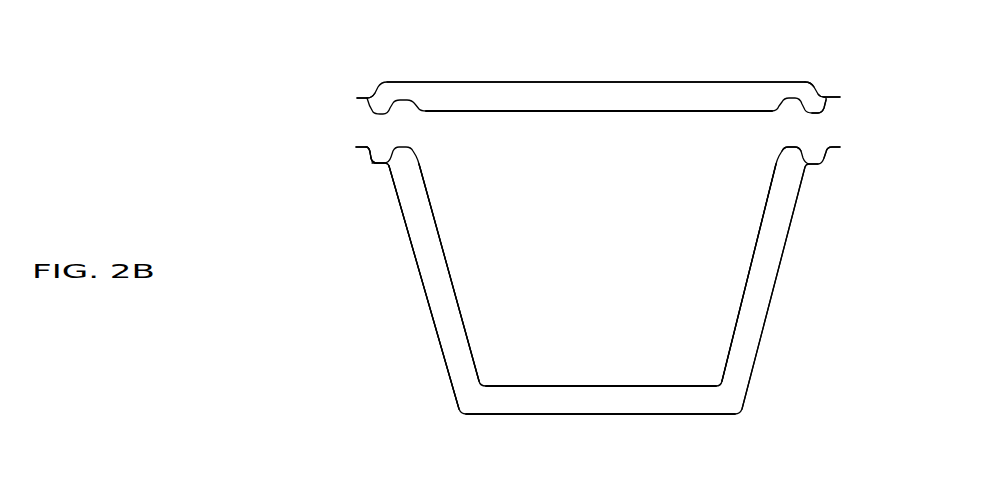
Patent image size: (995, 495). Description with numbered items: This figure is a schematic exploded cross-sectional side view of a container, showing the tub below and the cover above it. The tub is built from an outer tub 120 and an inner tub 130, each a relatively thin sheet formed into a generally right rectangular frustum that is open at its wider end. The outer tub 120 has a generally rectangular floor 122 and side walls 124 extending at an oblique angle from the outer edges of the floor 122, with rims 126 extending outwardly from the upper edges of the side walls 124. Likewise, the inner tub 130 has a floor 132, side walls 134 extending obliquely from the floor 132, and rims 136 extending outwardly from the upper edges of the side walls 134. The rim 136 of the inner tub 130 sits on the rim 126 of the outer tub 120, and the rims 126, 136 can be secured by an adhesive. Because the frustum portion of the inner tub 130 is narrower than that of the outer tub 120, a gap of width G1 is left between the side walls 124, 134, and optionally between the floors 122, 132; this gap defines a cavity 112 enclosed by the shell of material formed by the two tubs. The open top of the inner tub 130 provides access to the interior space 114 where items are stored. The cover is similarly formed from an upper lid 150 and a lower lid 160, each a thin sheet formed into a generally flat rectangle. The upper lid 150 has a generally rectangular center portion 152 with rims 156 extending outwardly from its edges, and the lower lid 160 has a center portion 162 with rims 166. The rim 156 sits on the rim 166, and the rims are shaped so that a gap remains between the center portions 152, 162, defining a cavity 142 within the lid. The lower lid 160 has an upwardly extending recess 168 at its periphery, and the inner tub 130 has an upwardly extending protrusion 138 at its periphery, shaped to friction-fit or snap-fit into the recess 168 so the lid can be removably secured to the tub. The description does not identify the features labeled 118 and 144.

The cavity 112 is at (510, 402).
The interior space 114 is at (601, 301).
The flange 118 is at (380, 162).
The outer tub 120 is at (760, 368).
The floor 122 is at (603, 414).
The side walls 124 is at (438, 358).
The rims 126 is at (373, 167).
The inner tub 130 is at (722, 346).
The floor 132 is at (600, 385).
The side walls 134 is at (452, 285).
The rims 136 is at (367, 158).
The protrusion 138 is at (790, 150).
The cavity 142 is at (498, 95).
The lid flange 144 is at (358, 95).
The upper lid 150 is at (614, 77).
The center portion 152 is at (465, 80).
The rims 156 is at (822, 95).
The lower lid 160 is at (624, 118).
The center portion 162 is at (468, 111).
The rims 166 is at (827, 103).
The recess 168 is at (790, 97).
The gap width G1 is at (478, 212).